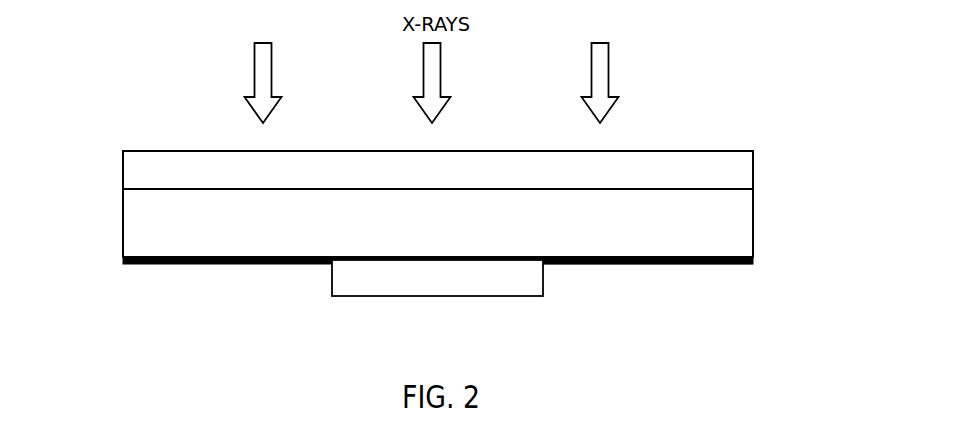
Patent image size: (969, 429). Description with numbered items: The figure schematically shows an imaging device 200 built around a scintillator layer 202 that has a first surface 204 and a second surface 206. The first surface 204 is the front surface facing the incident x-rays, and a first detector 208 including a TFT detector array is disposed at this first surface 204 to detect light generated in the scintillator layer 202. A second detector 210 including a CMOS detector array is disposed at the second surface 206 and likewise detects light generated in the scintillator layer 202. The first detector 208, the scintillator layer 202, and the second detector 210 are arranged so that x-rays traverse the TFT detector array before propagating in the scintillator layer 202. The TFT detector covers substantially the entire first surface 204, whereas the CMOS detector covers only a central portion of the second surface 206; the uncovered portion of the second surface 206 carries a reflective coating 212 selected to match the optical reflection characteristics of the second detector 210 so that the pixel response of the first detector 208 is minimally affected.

The imaging device 200 is at (168, 366).
The scintillator layer 202 is at (123, 228).
The first surface 204 is at (733, 189).
The second surface 206 is at (733, 257).
The first detector 208 is at (123, 166).
The second detector 210 is at (332, 279).
The reflective coating 212 is at (612, 263).